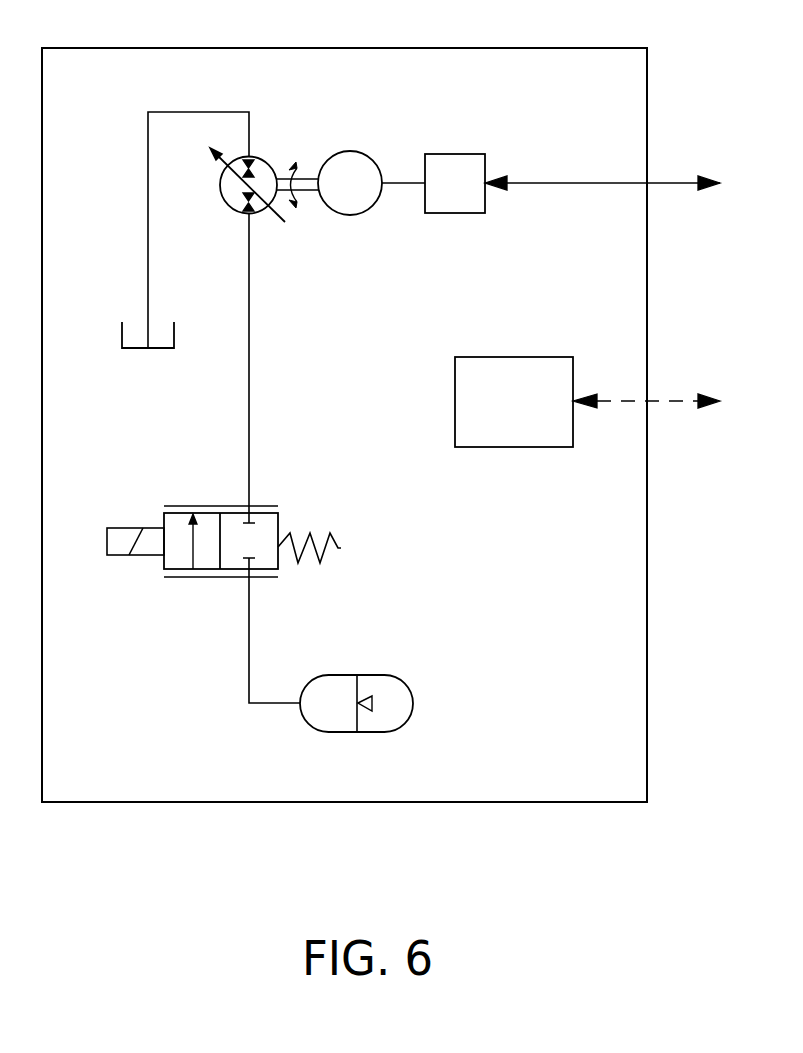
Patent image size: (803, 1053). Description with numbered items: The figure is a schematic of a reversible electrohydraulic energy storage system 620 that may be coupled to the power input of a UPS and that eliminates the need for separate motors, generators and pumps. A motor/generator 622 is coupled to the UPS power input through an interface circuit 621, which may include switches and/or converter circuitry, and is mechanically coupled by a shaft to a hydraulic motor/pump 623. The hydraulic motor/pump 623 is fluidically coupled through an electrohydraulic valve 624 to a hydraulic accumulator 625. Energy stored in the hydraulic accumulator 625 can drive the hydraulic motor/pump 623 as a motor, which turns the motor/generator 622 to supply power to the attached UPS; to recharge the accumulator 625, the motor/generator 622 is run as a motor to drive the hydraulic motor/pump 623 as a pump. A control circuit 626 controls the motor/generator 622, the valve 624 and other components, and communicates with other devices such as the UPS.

The electrohydraulic energy storage system 620 is at (344, 48).
The interface circuit 621 is at (455, 213).
The motor/generator 622 is at (350, 215).
The hydraulic motor/pump 623 is at (260, 210).
The electrohydraulic valve 624 is at (215, 577).
The hydraulic accumulator 625 is at (337, 675).
The control circuit 626 is at (513, 447).